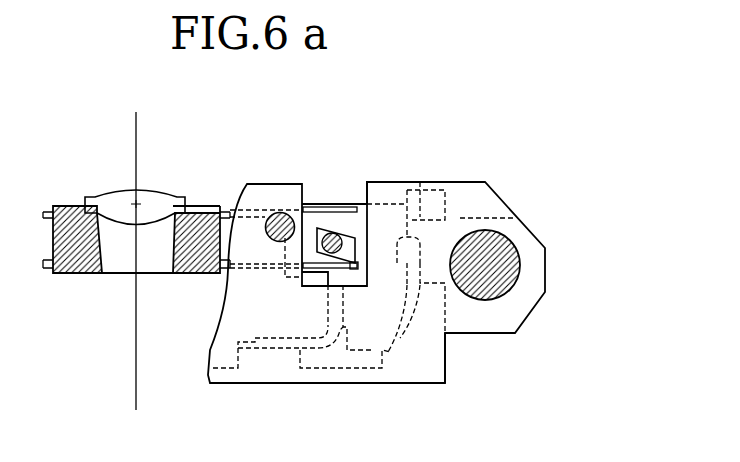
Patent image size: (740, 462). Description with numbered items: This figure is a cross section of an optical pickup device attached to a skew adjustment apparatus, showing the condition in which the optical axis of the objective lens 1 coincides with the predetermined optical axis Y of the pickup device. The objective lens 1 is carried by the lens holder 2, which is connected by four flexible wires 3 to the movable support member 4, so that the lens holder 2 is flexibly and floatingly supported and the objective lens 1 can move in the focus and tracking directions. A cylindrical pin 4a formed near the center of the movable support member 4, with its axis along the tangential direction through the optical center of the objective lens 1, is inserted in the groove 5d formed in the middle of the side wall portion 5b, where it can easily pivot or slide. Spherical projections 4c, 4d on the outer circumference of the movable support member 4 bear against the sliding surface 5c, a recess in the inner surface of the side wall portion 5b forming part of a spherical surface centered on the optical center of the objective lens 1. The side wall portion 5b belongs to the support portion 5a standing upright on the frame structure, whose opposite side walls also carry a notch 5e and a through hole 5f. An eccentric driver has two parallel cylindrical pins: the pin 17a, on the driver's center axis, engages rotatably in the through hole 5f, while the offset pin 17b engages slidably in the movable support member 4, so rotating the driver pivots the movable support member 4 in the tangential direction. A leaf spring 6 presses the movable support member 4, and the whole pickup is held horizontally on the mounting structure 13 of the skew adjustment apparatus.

The predetermined optical axis Y is at (133, 137).
The objective lens 1 is at (148, 190).
The lens holder 2 is at (73, 273).
The flexible wire 3 is at (243, 186).
The movable support member 4 is at (329, 228).
The cylindrical pin 4a is at (425, 203).
The spherical projection 4c is at (400, 253).
The spherical projection 4d is at (385, 348).
The support portion 5a is at (398, 174).
The side wall portion 5b is at (428, 190).
The sliding surface 5c is at (405, 320).
The groove 5d is at (420, 232).
The notch 5e is at (353, 183).
The through hole 5f is at (276, 241).
The leaf spring 6 is at (315, 345).
The mounting structure 13 is at (515, 270).
The cylindrical pin 17a is at (280, 212).
The cylindrical pin 17b is at (325, 207).